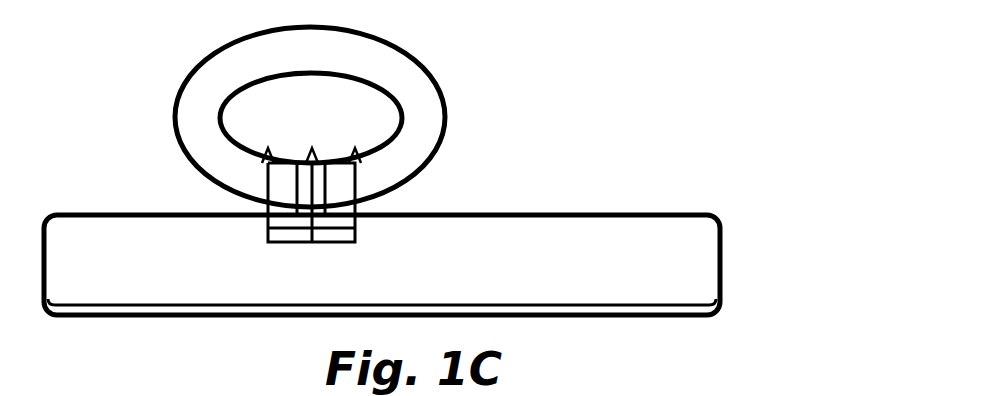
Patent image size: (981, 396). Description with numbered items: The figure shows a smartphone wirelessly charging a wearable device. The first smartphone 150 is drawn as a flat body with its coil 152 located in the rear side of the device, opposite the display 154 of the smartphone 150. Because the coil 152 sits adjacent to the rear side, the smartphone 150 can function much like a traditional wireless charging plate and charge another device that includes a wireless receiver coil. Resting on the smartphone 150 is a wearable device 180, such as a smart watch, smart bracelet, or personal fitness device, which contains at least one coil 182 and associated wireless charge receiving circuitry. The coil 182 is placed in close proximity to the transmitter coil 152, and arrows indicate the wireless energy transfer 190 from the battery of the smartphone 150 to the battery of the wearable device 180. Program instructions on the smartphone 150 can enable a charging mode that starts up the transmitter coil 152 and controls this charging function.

The first smartphone 150 is at (722, 262).
The coil 152 is at (293, 243).
The display 154 is at (620, 307).
The wearable device 180 is at (417, 60).
The coil 182 is at (297, 188).
The wireless energy transfer 190 is at (365, 173).